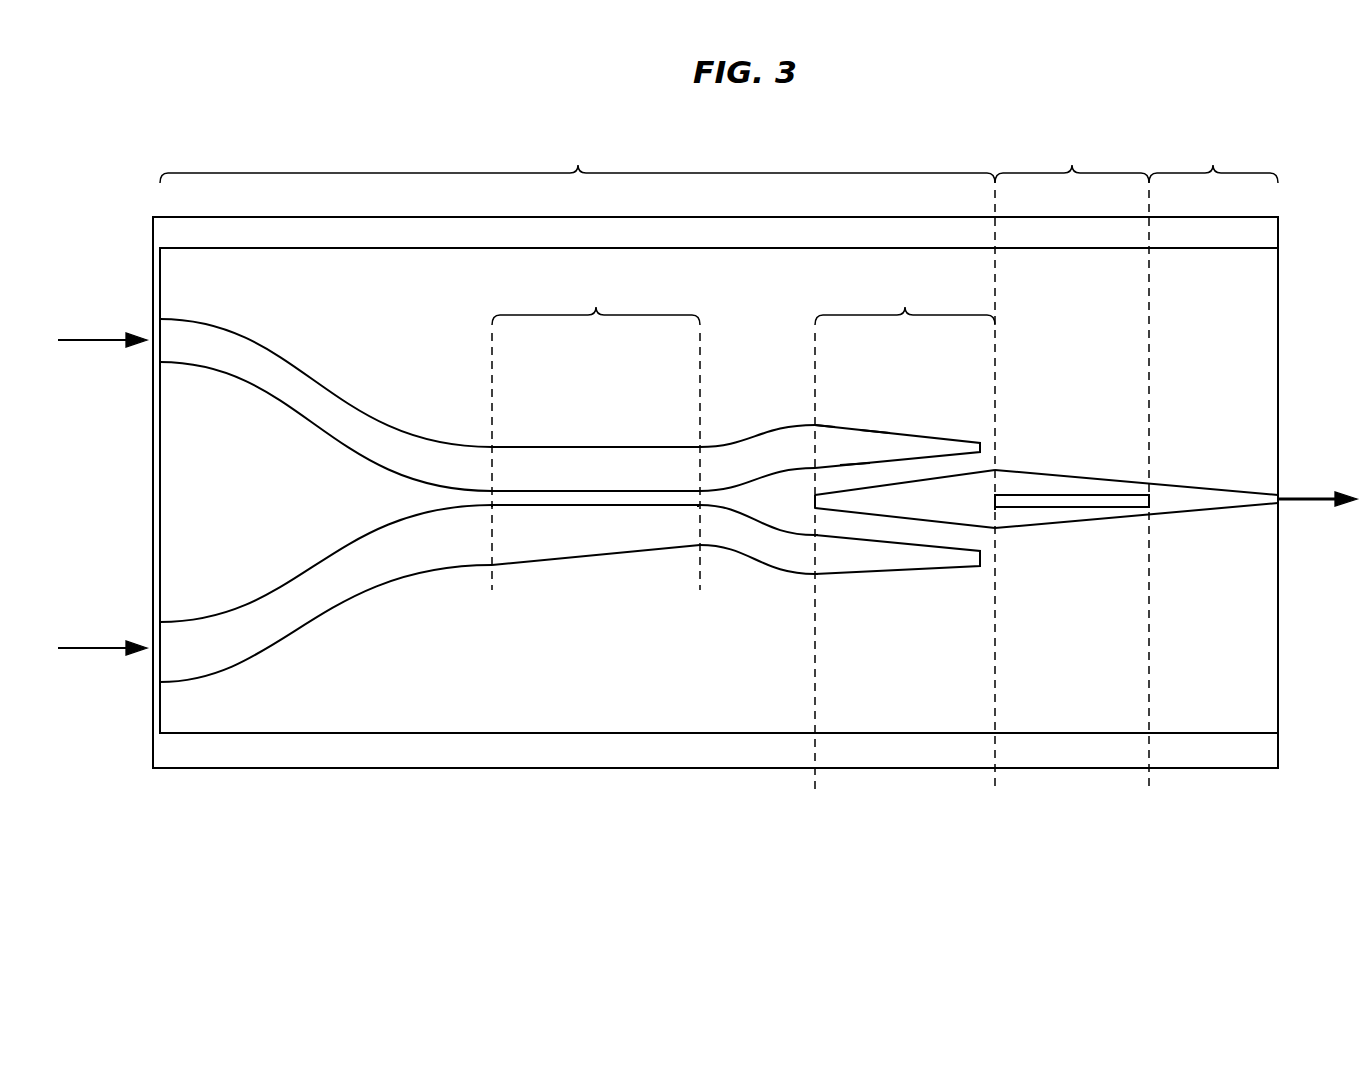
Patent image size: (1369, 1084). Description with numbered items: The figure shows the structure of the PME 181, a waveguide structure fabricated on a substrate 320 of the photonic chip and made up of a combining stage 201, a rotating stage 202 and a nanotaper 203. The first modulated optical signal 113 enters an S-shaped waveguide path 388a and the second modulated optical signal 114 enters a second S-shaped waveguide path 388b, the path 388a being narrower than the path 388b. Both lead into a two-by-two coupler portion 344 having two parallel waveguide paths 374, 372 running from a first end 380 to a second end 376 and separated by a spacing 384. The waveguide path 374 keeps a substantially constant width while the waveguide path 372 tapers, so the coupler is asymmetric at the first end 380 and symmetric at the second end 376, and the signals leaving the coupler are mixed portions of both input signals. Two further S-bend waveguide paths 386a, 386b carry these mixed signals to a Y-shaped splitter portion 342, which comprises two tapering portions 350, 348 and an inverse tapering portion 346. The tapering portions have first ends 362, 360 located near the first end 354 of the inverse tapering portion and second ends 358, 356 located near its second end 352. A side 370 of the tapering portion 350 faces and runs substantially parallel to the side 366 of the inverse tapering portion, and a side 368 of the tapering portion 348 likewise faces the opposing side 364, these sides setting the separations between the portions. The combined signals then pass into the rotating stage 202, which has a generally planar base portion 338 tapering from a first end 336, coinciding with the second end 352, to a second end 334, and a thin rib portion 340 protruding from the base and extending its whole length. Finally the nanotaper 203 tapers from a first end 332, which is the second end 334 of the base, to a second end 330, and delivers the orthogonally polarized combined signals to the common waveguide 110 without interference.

The common waveguide 110 is at (1305, 495).
The modulated optical signal 113 is at (96, 294).
The modulated optical signal 114 is at (96, 603).
The PME 181 is at (314, 98).
The combining stage 201 is at (577, 161).
The rotating stage 202 is at (1072, 161).
The nanotaper 203 is at (1213, 161).
The substrate 320 is at (483, 710).
The second end 330 is at (1282, 507).
The first end 332 is at (1143, 517).
The second end 334 is at (1147, 512).
The first end 336 is at (997, 510).
The base portion 338 is at (1112, 490).
The rib portion 340 is at (1038, 502).
The splitter portion 342 is at (905, 303).
The coupler portion 344 is at (596, 303).
The inverse tapering portion 346 is at (910, 498).
The tapering portion 348 is at (862, 553).
The tapering portion 350 is at (875, 447).
The second end 352 is at (1003, 521).
The first end 354 is at (813, 500).
The second end 356 is at (984, 556).
The second end 358 is at (985, 446).
The first end 360 is at (815, 560).
The first end 362 is at (816, 440).
The side 364 is at (948, 523).
The side 366 is at (938, 467).
The side 368 is at (887, 538).
The side 370 is at (858, 467).
The waveguide path 372 is at (547, 530).
The waveguide path 374 is at (592, 477).
The second end 376 is at (693, 500).
The first end 380 is at (495, 497).
The spacing 384 is at (595, 498).
The waveguide path 386a is at (767, 455).
The waveguide path 386b is at (750, 543).
The waveguide path 388a is at (337, 407).
The waveguide path 388b is at (377, 562).